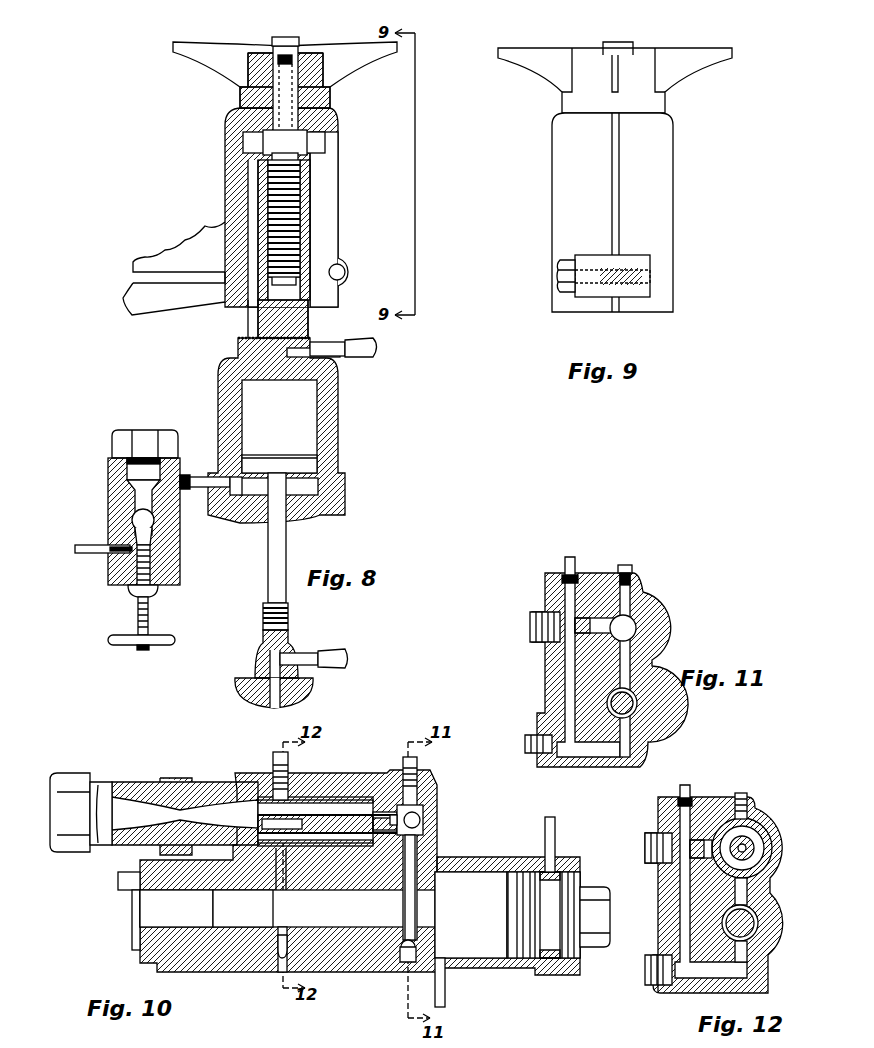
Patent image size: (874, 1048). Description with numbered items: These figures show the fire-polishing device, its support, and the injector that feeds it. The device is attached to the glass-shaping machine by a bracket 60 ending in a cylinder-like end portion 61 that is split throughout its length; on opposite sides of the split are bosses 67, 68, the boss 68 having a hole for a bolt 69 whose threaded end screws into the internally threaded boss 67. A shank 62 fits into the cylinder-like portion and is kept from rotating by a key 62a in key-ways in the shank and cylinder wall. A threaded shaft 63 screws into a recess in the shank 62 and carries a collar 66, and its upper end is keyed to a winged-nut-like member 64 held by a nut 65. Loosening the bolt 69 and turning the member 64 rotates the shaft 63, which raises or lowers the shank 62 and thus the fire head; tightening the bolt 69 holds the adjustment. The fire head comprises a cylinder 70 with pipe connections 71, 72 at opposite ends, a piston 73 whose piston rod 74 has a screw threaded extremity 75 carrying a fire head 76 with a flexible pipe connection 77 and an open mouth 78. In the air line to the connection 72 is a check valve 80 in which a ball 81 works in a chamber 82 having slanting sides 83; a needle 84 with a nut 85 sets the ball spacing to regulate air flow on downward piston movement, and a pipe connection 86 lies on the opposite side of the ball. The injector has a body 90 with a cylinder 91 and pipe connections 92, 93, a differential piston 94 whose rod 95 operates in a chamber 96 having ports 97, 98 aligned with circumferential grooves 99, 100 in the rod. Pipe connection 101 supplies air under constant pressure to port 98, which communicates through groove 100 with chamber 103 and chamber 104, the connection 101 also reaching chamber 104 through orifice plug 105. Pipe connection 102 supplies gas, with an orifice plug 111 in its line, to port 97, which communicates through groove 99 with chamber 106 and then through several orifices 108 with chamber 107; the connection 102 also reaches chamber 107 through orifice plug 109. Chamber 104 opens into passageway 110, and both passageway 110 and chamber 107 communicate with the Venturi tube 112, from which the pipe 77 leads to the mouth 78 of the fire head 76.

In FIG. 8, the bracket 60 is at (190, 258).
In FIG. 9, the bracket 60 is at (640, 153).
In FIG. 8, the cylinder-like end portion 61 is at (301, 164).
In FIG. 8, the shank 62 is at (292, 326).
In FIG. 8, the key 62a is at (255, 304).
In FIG. 8, the shaft 63 is at (283, 152).
In FIG. 8, the winged-nut-like member 64 is at (210, 63).
In FIG. 8, the nut 65 is at (289, 44).
In FIG. 8, the collar 66 is at (292, 139).
In FIG. 8, the boss 67 is at (347, 268).
In FIG. 9, the boss 67 is at (635, 262).
In FIG. 9, the boss 68 is at (590, 288).
In FIG. 9, the bolt 69 is at (565, 272).
In FIG. 8, the cylinder 70 is at (305, 416).
In FIG. 8, the pipe connection 71 is at (342, 354).
In FIG. 8, the pipe connection 72 is at (195, 488).
In FIG. 8, the piston 73 is at (290, 470).
In FIG. 8, the piston rod 74 is at (280, 560).
In FIG. 8, the screw threaded extremity 75 is at (289, 612).
In FIG. 8, the fire head 76 is at (298, 648).
In FIG. 8, the flexible pipe connection 77 is at (332, 667).
In FIG. 10, the flexible pipe connection 77 is at (95, 848).
In FIG. 8, the open mouth 78 is at (276, 690).
In FIG. 8, the check valve 80 is at (108, 476).
In FIG. 8, the ball 81 is at (143, 520).
In FIG. 8, the chamber 82 is at (145, 496).
In FIG. 8, the slanting sides 83 is at (135, 536).
In FIG. 8, the needle 84 is at (150, 615).
In FIG. 8, the nut 85 is at (159, 592).
In FIG. 8, the pipe connection 86 is at (103, 552).
In FIG. 10, the injector body 90 is at (365, 967).
In FIG. 10, the cylinder 91 is at (484, 880).
In FIG. 10, the pipe connection 92 is at (556, 834).
In FIG. 10, the pipe connection 93 is at (445, 990).
In FIG. 10, the differential piston 94 is at (522, 880).
In FIG. 10, the rod 95 is at (233, 917).
In FIG. 12, the rod 95 is at (780, 912).
In FIG. 10, the chamber 96 is at (170, 907).
In FIG. 10, the port 97 is at (276, 935).
In FIG. 12, the port 97 is at (748, 960).
In FIG. 11, the port 98 is at (625, 732).
In FIG. 10, the port 98 is at (402, 958).
In FIG. 10, the circumferential groove 99 is at (290, 928).
In FIG. 12, the circumferential groove 99 is at (760, 927).
In FIG. 10, the circumferential groove 100 is at (410, 938).
In FIG. 11, the pipe connection 101 is at (565, 561).
In FIG. 10, the pipe connection 101 is at (418, 762).
In FIG. 11, the pipe connection 102 is at (640, 705).
In FIG. 10, the pipe connection 102 is at (275, 752).
In FIG. 12, the pipe connection 102 is at (680, 792).
In FIG. 11, the chamber 103 is at (625, 650).
In FIG. 10, the chamber 103 is at (415, 862).
In FIG. 11, the chamber 104 is at (628, 626).
In FIG. 10, the chamber 104 is at (423, 818).
In FIG. 11, the orifice plug 105 is at (592, 615).
In FIG. 10, the chamber 106 is at (238, 922).
In FIG. 12, the chamber 106 is at (748, 893).
In FIG. 10, the chamber 107 is at (308, 800).
In FIG. 12, the chamber 107 is at (768, 830).
In FIG. 10, the orifices 108 is at (262, 782).
In FIG. 12, the orifices 108 is at (770, 843).
In FIG. 12, the orifice plug 109 is at (706, 835).
In FIG. 10, the passageway 110 is at (345, 807).
In FIG. 12, the passageway 110 is at (748, 820).
In FIG. 12, the orifice plug 111 is at (672, 995).
In FIG. 10, the Venturi tube 112 is at (175, 780).